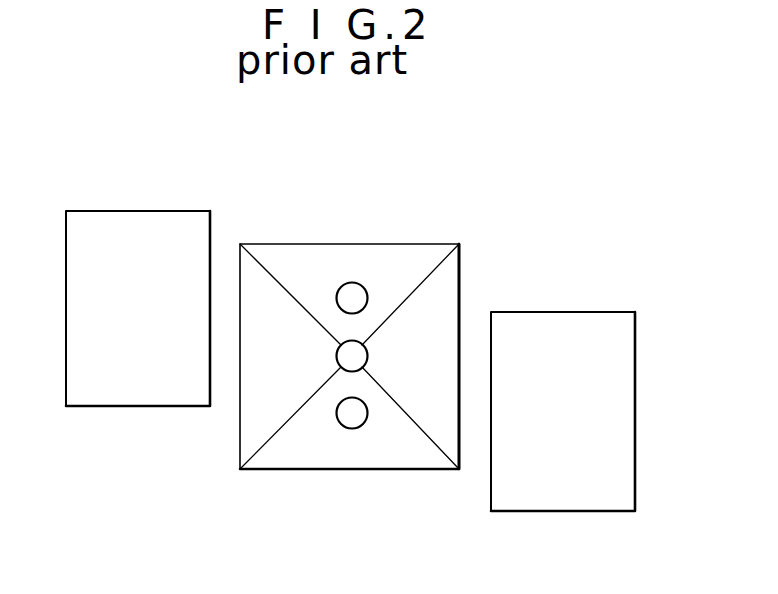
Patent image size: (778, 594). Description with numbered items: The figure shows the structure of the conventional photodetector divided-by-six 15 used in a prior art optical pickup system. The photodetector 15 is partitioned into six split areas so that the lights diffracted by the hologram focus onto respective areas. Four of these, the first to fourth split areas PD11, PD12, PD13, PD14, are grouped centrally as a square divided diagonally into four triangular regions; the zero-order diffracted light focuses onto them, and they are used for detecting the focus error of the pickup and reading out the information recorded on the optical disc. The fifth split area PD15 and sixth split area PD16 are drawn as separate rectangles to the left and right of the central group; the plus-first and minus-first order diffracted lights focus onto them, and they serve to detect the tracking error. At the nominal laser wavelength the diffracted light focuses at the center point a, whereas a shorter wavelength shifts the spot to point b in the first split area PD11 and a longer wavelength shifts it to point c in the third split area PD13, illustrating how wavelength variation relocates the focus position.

The photodetector divided-by-six 15 is at (273, 120).
The first split area PD11 is at (296, 259).
The second split area PD12 is at (250, 430).
The third split area PD13 is at (330, 455).
The fourth split area PD14 is at (437, 308).
The fifth split area PD15 is at (133, 229).
The sixth split area PD16 is at (577, 322).